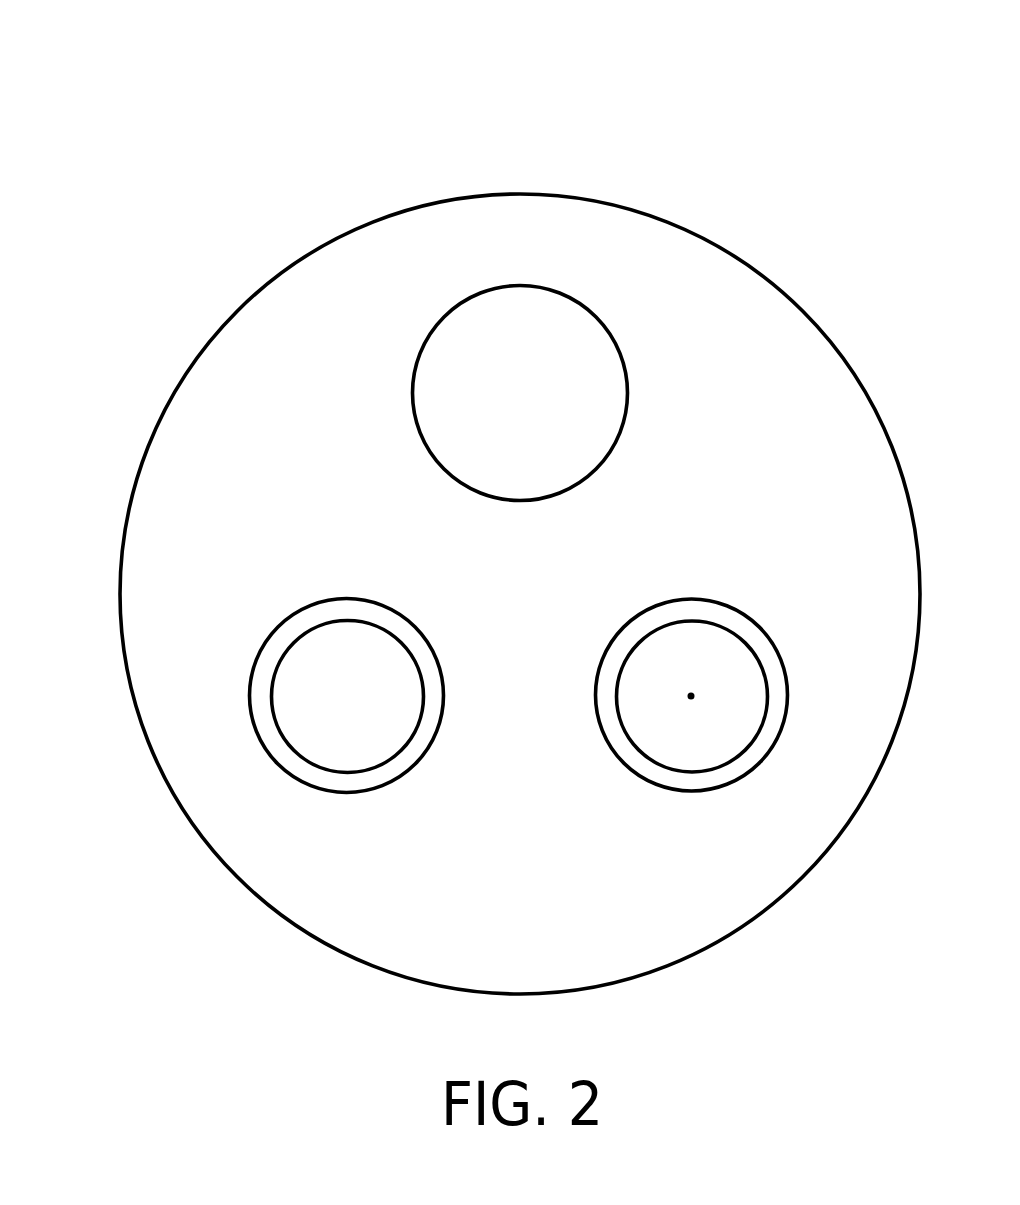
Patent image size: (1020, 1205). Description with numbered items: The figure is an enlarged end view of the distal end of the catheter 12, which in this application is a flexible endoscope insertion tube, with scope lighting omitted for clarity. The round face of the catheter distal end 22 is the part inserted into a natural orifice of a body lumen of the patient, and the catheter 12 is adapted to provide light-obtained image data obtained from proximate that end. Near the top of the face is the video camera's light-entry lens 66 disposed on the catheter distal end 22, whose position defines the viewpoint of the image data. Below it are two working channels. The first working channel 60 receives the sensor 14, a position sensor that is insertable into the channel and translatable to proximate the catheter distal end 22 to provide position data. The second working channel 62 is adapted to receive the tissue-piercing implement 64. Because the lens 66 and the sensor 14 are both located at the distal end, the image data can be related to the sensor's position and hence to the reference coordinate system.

The catheter 12 is at (210, 142).
The catheter distal end 22 is at (227, 377).
The light-entry lens 66 is at (590, 342).
The first working channel 60 is at (260, 674).
The sensor 14 is at (302, 738).
The second working channel 62 is at (779, 674).
The tissue-piercing implement 64 is at (735, 737).